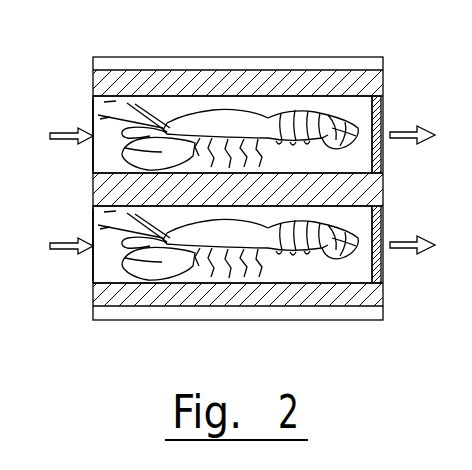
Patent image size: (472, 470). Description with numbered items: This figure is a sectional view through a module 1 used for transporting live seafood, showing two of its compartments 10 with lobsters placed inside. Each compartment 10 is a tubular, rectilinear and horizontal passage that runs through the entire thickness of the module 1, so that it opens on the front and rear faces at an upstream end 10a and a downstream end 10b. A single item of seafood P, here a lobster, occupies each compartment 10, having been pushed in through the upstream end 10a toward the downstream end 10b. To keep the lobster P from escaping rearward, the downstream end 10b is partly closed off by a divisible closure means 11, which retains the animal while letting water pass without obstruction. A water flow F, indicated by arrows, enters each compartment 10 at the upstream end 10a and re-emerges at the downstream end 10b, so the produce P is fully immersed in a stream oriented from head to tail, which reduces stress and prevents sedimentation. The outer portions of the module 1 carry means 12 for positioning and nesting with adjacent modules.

The module 1 is at (348, 44).
The compartment 10 is at (347, 108).
The upstream end 10a is at (93, 160).
The downstream end 10b is at (381, 148).
The divisible closure means 11 is at (384, 164).
The means for positioning and nesting 12 is at (284, 64).
The item of seafood P is at (205, 126).
The water flow F is at (242, 184).